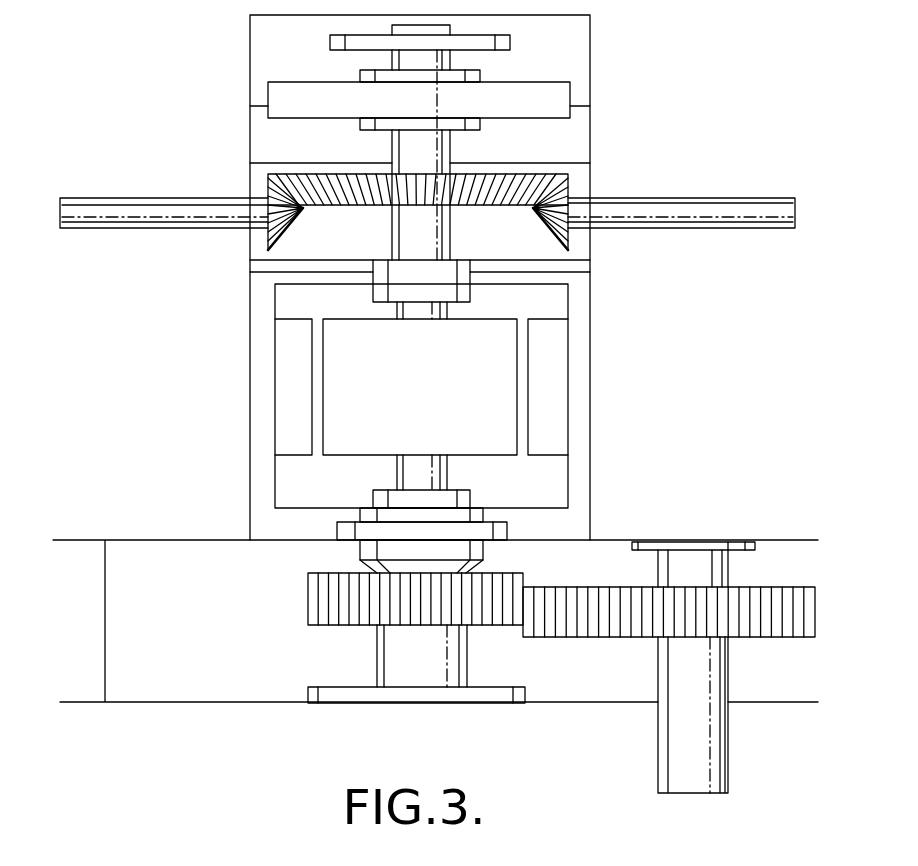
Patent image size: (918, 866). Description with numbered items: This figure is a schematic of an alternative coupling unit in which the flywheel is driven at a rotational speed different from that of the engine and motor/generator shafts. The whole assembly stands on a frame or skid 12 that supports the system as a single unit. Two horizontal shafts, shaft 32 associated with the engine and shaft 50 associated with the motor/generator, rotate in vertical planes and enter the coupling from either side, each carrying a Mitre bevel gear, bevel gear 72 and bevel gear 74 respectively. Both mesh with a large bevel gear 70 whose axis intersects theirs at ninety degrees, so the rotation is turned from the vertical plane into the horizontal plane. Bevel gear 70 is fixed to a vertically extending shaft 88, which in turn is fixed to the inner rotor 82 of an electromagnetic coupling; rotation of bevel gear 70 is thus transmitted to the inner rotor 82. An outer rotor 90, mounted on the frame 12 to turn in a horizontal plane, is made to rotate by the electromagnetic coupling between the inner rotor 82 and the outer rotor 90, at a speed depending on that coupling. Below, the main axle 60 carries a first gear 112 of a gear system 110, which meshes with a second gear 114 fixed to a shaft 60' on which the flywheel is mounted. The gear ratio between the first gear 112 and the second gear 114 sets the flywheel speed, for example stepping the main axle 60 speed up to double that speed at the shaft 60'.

The frame or skid 12 is at (242, 672).
The shaft 32 is at (180, 213).
The shaft 50 is at (645, 208).
The main axle 60 is at (391, 664).
The shaft 60' is at (724, 667).
The bevel gear 70 is at (485, 185).
The bevel gear 72 is at (293, 228).
The bevel gear 74 is at (567, 183).
The inner rotor 82 is at (485, 347).
The vertically extending shaft 88 is at (453, 228).
The outer rotor 90 is at (550, 418).
The gear system 110 is at (540, 660).
The first gear 112 is at (307, 590).
The second gear 114 is at (607, 587).